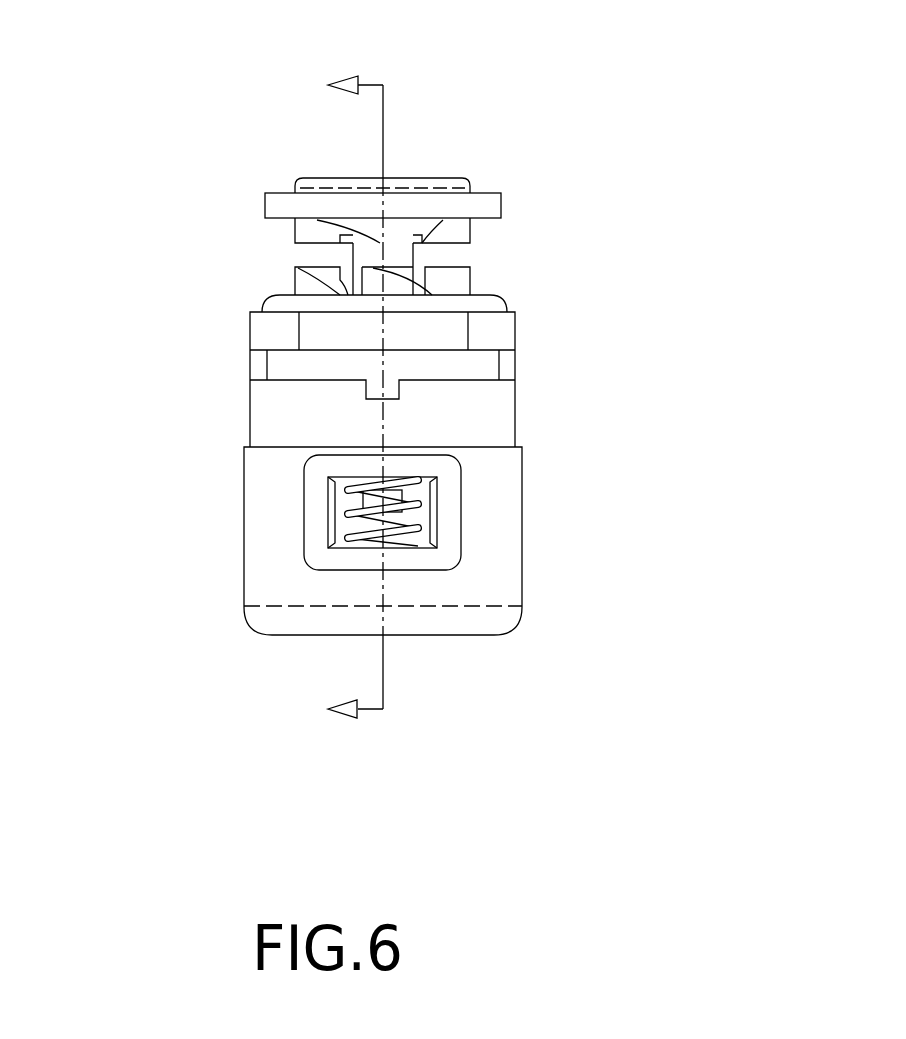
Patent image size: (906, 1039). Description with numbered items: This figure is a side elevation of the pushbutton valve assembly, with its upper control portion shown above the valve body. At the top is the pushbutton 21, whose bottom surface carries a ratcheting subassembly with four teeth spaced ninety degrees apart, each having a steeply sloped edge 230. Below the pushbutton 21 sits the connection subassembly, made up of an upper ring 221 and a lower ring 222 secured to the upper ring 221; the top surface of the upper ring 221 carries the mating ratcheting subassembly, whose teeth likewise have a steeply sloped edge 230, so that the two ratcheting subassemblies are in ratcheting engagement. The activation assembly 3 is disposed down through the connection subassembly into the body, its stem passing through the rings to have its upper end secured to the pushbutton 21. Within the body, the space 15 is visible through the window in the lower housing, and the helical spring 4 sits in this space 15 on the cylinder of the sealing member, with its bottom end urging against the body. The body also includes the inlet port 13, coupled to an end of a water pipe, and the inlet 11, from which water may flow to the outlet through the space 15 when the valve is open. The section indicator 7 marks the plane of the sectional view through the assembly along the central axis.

The pushbutton 21 is at (320, 207).
The activation assembly 3 is at (400, 258).
The steeply sloped edge 230 is at (313, 280).
The upper ring 221 is at (495, 330).
The lower ring 222 is at (487, 430).
The inlet 11 is at (423, 518).
The inlet port 13 is at (305, 495).
The space 15 is at (340, 505).
The helical spring 4 is at (373, 545).
The section line 7- 7 is at (340, 399).